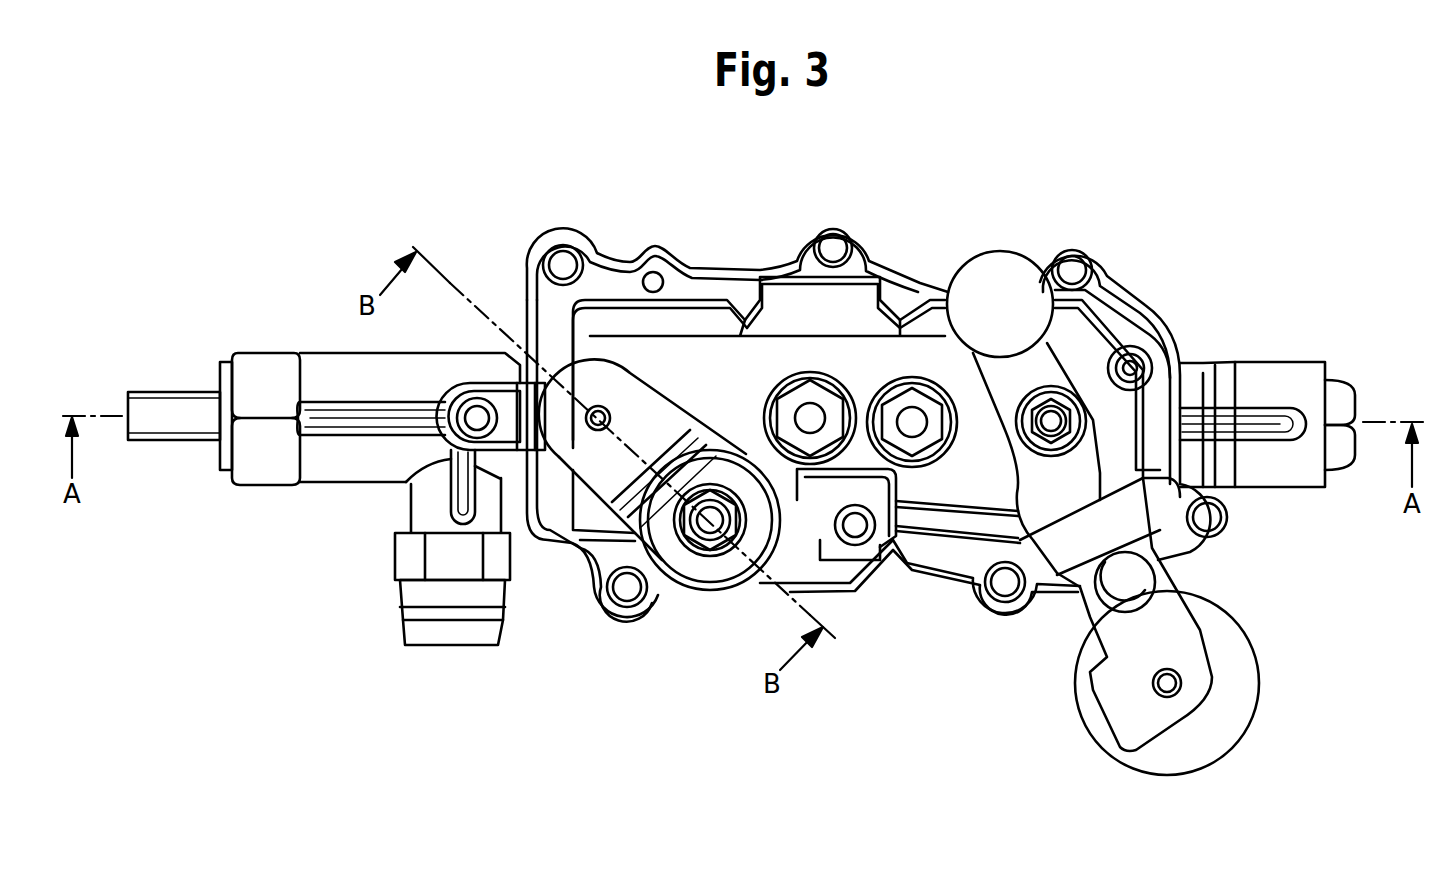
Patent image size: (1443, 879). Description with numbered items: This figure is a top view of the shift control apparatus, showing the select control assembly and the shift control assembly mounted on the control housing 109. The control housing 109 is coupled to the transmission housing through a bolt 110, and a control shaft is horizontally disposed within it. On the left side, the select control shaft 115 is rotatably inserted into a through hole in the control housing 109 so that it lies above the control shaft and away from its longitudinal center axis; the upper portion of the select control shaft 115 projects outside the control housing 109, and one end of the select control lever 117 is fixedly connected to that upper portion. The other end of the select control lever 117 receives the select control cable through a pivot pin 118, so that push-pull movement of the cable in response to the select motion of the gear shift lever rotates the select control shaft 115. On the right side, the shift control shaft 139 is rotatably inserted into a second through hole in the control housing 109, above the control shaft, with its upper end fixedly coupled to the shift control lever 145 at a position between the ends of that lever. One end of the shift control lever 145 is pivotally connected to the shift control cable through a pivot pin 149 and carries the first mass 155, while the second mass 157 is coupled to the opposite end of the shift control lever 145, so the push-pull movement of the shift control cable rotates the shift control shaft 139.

The control housing 109 is at (685, 355).
The bolt 110 is at (832, 240).
The select control shaft 115 is at (707, 533).
The select control lever 117 is at (603, 477).
The pivot pin 118 is at (603, 408).
The shift control shaft 139 is at (1053, 408).
The shift control lever 145 is at (1023, 515).
The pivot pin 149 is at (1168, 690).
The first mass 155 is at (1253, 688).
The second mass 157 is at (1003, 253).